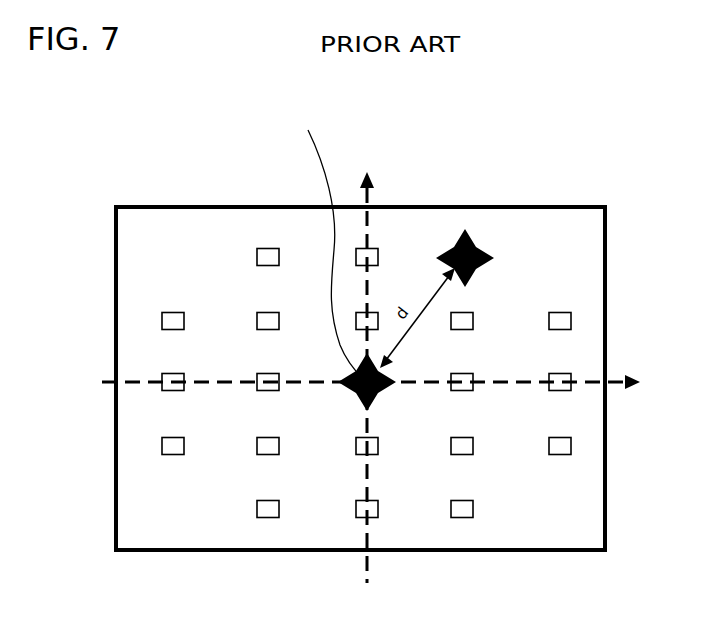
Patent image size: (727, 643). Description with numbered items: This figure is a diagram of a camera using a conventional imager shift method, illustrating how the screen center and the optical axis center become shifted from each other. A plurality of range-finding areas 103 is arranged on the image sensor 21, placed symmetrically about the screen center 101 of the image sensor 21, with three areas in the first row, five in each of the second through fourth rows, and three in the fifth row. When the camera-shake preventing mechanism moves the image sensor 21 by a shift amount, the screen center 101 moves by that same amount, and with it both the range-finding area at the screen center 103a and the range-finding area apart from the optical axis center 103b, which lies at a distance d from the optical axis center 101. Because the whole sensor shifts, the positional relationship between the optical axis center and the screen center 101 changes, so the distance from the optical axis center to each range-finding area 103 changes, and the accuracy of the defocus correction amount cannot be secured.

The image sensor 21 is at (586, 207).
The screen center 101 is at (309, 251).
The range-finding areas 103 is at (571, 318).
The range-finding area at the screen center 103a is at (364, 392).
The range-finding area apart from the optical axis center 103b is at (478, 250).